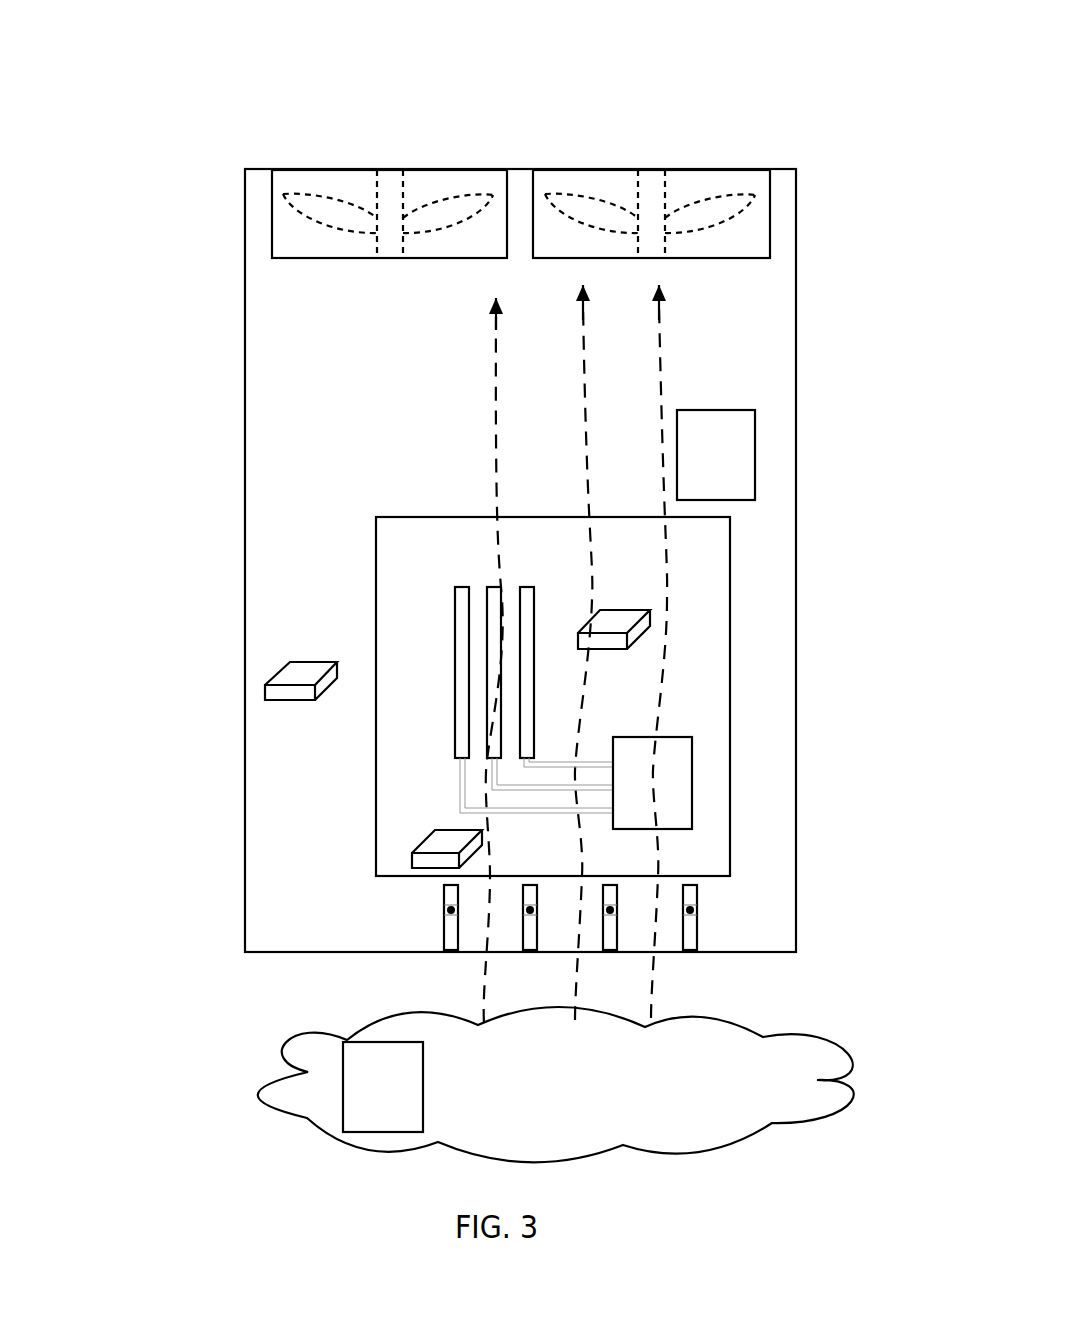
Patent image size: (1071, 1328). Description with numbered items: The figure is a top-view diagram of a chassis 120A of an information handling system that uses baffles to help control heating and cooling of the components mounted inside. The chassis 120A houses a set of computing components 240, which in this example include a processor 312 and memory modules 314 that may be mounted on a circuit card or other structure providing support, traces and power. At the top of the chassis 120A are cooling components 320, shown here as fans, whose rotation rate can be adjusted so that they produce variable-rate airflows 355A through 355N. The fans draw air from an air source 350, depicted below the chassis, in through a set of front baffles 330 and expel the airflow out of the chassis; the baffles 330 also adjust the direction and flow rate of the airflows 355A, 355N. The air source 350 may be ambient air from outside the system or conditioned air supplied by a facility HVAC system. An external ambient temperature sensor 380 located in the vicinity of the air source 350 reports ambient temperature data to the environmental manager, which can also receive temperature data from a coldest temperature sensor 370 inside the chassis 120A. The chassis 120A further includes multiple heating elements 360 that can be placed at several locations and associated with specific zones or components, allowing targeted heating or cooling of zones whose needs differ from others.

The chassis 120A is at (150, 117).
The cooling components 320 is at (602, 183).
The airflow A 355A is at (462, 323).
The airflow N 355N is at (673, 317).
The coldest temperature sensor 370 is at (767, 448).
The computing components 240 is at (707, 640).
The memory modules 314 is at (452, 632).
The processor 312 is at (678, 792).
The heating elements 360 is at (565, 665).
The baffles 330 is at (430, 928).
The air source 350 is at (556, 1084).
The ambient temperature sensor 380 is at (332, 1098).